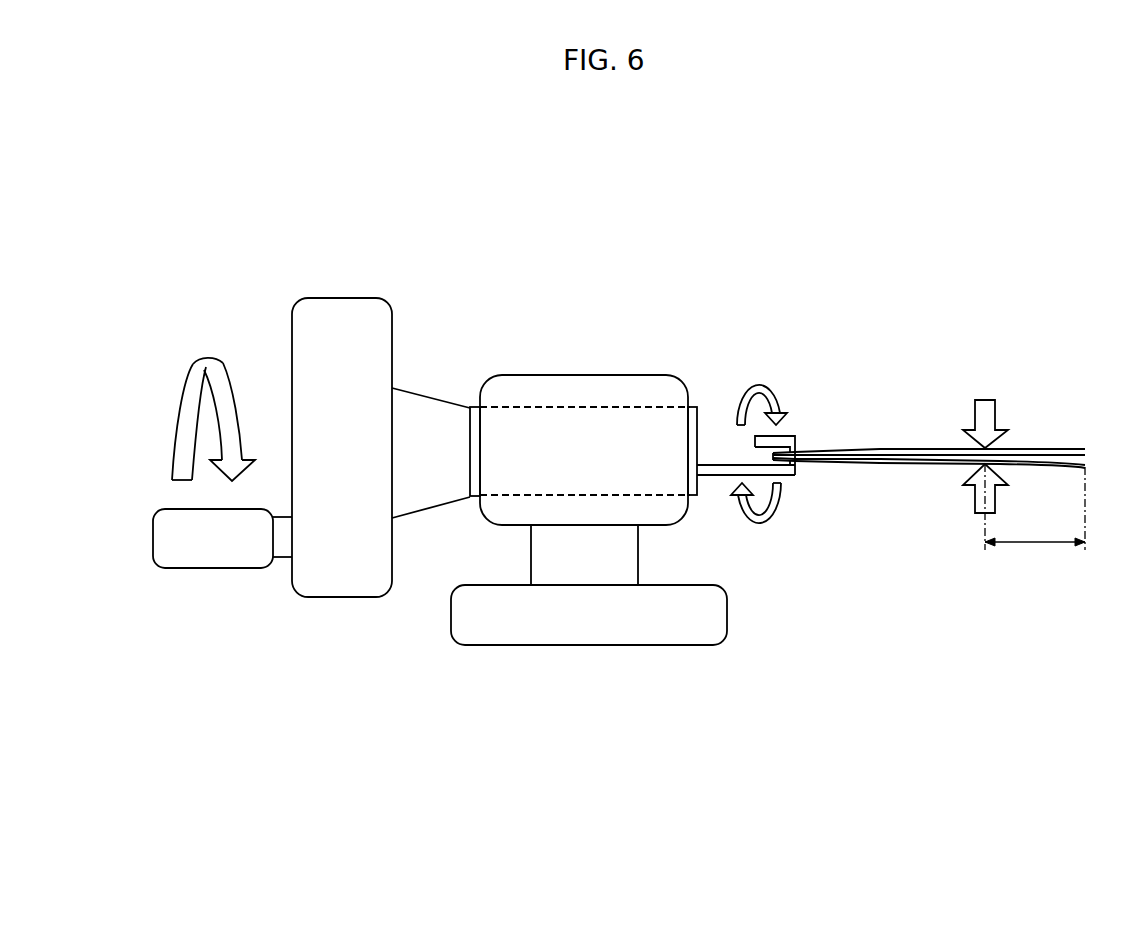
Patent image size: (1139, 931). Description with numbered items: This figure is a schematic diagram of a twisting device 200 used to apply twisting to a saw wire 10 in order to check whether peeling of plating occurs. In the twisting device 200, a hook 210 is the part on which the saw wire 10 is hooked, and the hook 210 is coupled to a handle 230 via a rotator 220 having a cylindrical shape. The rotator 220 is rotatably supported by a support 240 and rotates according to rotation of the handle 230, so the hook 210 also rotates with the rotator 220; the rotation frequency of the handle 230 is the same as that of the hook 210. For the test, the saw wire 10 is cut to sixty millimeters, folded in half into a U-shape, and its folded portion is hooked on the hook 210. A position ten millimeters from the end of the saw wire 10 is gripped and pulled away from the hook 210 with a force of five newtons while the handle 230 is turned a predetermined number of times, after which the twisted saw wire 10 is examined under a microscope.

The saw wire 10 is at (1041, 448).
The twisting device 200 is at (753, 318).
The hook 210 is at (792, 437).
The rotator 220 is at (697, 407).
The handle 230 is at (375, 335).
The support 240 is at (613, 393).